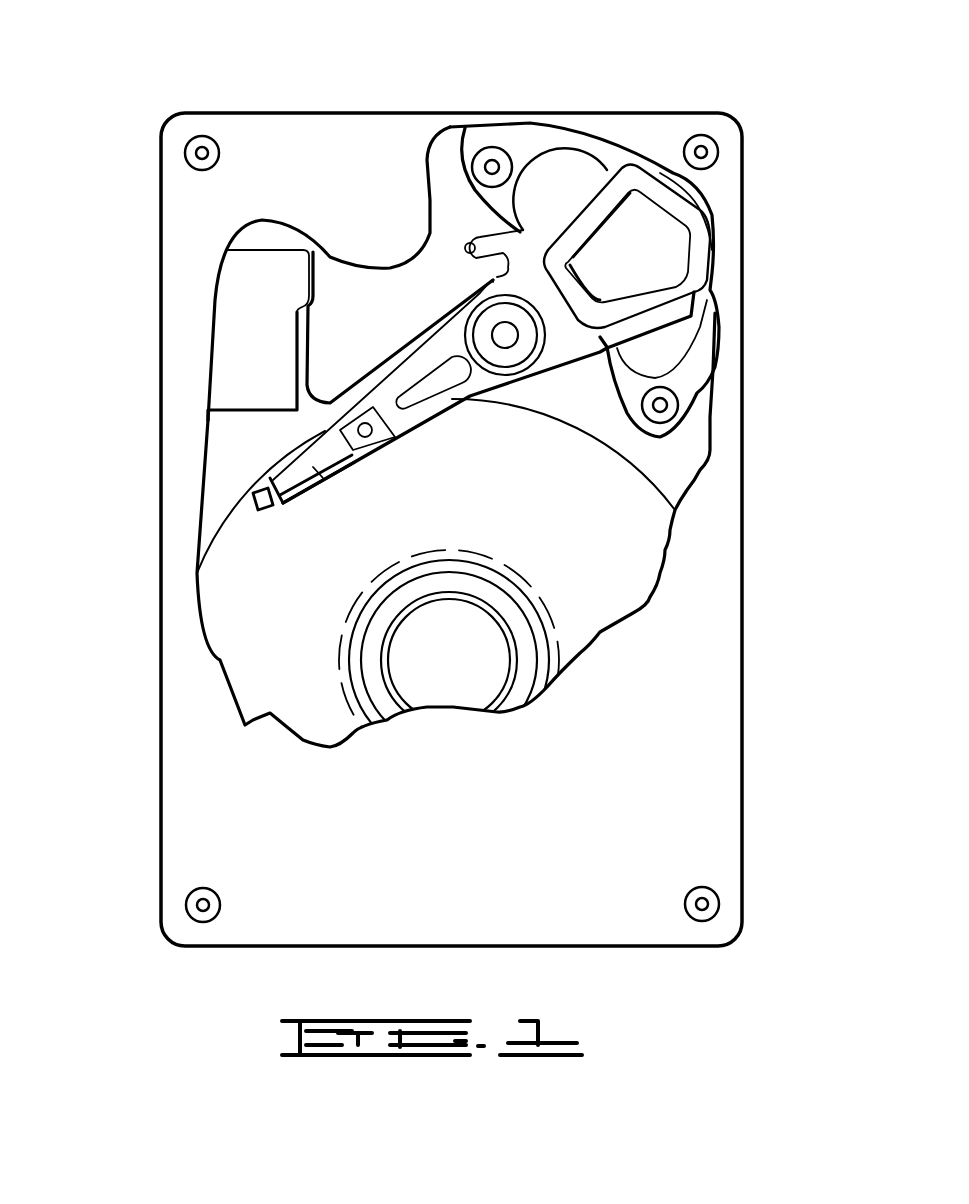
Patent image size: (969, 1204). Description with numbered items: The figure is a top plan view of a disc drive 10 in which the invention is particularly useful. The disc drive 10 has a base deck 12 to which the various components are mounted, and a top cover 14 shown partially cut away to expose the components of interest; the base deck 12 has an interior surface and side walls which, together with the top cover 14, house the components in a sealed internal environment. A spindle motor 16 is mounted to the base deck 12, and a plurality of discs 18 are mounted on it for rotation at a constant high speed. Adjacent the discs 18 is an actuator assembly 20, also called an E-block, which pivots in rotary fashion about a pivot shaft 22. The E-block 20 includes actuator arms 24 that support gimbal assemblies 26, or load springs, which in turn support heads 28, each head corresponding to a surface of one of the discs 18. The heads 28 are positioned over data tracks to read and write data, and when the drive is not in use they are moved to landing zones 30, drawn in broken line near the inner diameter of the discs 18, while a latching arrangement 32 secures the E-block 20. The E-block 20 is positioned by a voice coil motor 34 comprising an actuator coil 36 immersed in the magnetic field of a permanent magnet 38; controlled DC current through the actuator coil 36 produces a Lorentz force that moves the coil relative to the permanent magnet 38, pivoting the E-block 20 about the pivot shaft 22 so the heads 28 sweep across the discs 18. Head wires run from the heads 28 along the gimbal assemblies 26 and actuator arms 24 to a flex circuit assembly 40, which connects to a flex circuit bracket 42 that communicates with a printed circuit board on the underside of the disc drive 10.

The disc drive 10 is at (228, 92).
The base deck 12 is at (232, 458).
The top cover 14 is at (210, 747).
The spindle motor 16 is at (460, 668).
The discs 18 is at (618, 563).
The actuator assembly 20 is at (483, 376).
The pivot shaft 22 is at (508, 340).
The actuator arms 24 is at (402, 432).
The gimbal assemblies 26 is at (327, 480).
The heads 28 is at (260, 513).
The landing zones 30 is at (343, 627).
The latching arrangement 32 is at (465, 243).
The voice coil motor 34 is at (558, 178).
The actuator coil 36 is at (692, 240).
The permanent magnet 38 is at (537, 197).
The flex circuit assembly 40 is at (422, 330).
The flex circuit bracket 42 is at (240, 340).